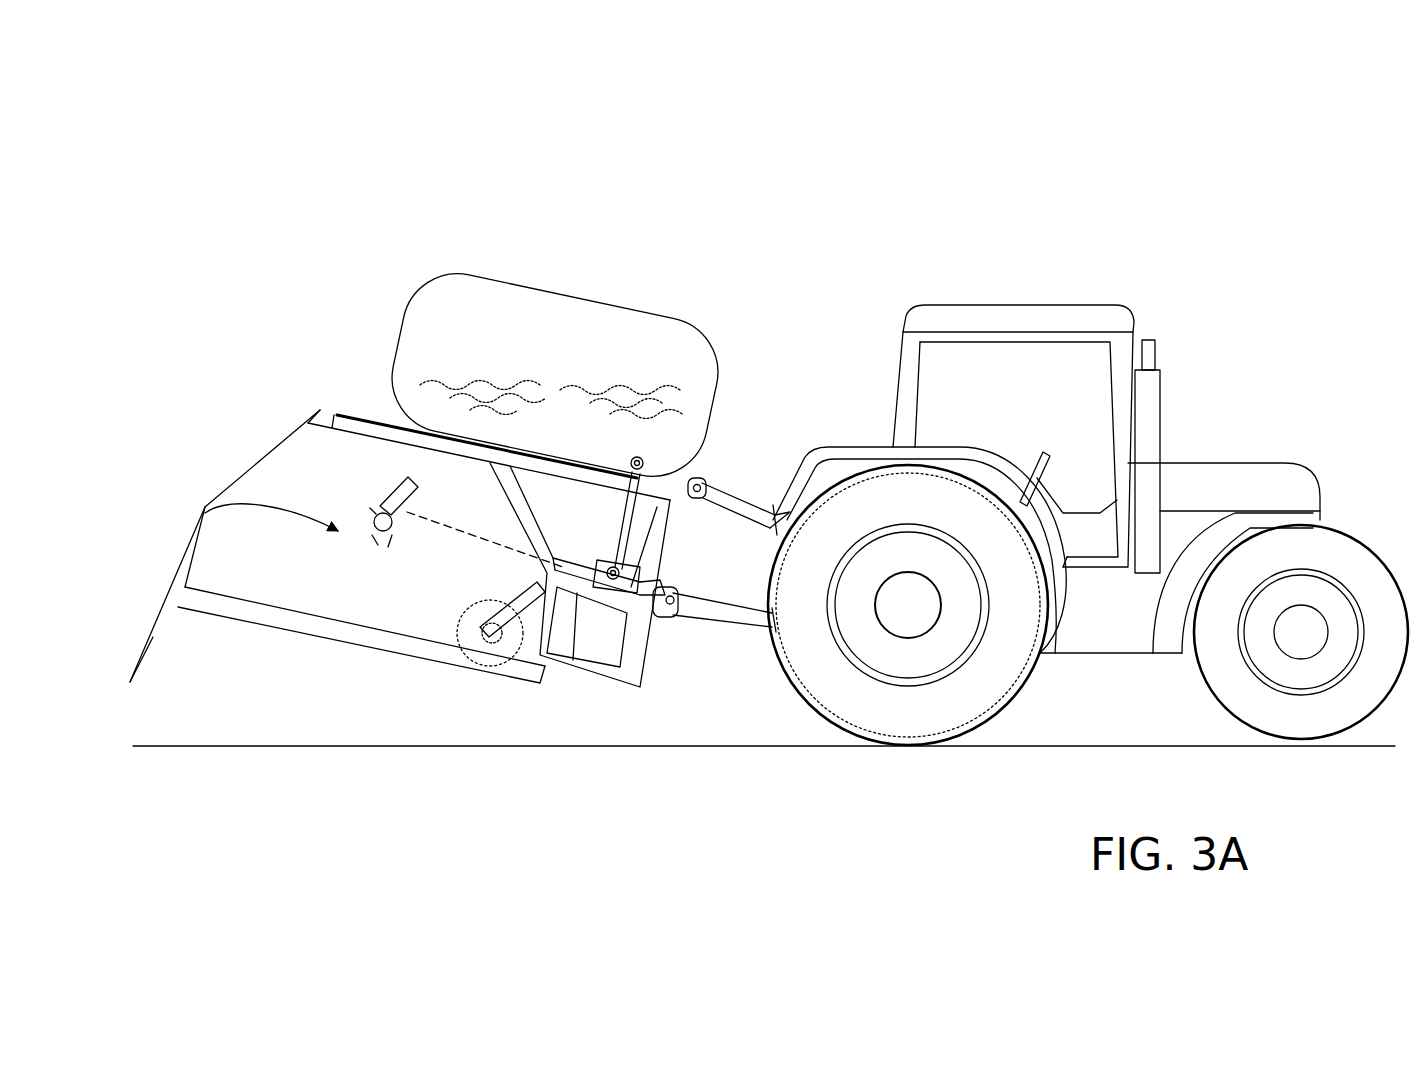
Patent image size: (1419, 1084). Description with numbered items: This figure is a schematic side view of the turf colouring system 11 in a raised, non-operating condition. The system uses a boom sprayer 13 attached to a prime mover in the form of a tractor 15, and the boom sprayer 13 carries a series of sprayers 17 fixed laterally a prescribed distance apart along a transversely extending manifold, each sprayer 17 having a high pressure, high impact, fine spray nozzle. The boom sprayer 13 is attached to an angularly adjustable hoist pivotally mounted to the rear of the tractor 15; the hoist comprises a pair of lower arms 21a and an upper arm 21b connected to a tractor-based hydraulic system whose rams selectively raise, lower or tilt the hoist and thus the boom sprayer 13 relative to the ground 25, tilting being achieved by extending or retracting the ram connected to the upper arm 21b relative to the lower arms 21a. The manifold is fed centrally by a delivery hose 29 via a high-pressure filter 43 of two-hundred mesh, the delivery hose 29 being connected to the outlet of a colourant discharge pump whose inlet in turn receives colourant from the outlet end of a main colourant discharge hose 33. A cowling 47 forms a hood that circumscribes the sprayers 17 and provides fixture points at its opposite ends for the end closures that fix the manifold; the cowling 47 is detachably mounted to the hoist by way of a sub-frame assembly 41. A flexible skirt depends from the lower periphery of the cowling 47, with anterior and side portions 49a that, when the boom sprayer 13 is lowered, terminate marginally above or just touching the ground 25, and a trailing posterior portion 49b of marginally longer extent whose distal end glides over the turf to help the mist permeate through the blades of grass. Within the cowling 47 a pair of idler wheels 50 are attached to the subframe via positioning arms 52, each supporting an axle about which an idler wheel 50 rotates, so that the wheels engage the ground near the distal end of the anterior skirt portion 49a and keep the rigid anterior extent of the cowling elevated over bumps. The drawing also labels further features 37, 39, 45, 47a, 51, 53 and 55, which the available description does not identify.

The turf colouring system 11 is at (846, 244).
The boom sprayer 13 is at (447, 497).
The tractor 15 is at (1216, 347).
The sprayers 17 is at (322, 582).
The lower arms 21a is at (743, 613).
The upper arm 21b is at (750, 490).
The ground 25 is at (418, 748).
The delivery hose 29 is at (455, 490).
The main colourant discharge hose 33 is at (650, 470).
The tank 37 is at (677, 310).
The fluid 39 is at (517, 327).
The sub-frame assembly 41 is at (205, 512).
The high-pressure filter 43 is at (400, 482).
The mast 45 is at (320, 410).
The cowling 47 is at (288, 425).
The frame leg 47a is at (203, 508).
The anterior and side portions 49a is at (358, 633).
The trailing posterior portion 49b is at (153, 637).
The idler wheels 50 is at (458, 653).
The lower hitch pin 51 is at (660, 613).
The positioning arms 52 is at (530, 591).
The mounting bracket 53 is at (647, 653).
The hitch connector 55 is at (707, 615).